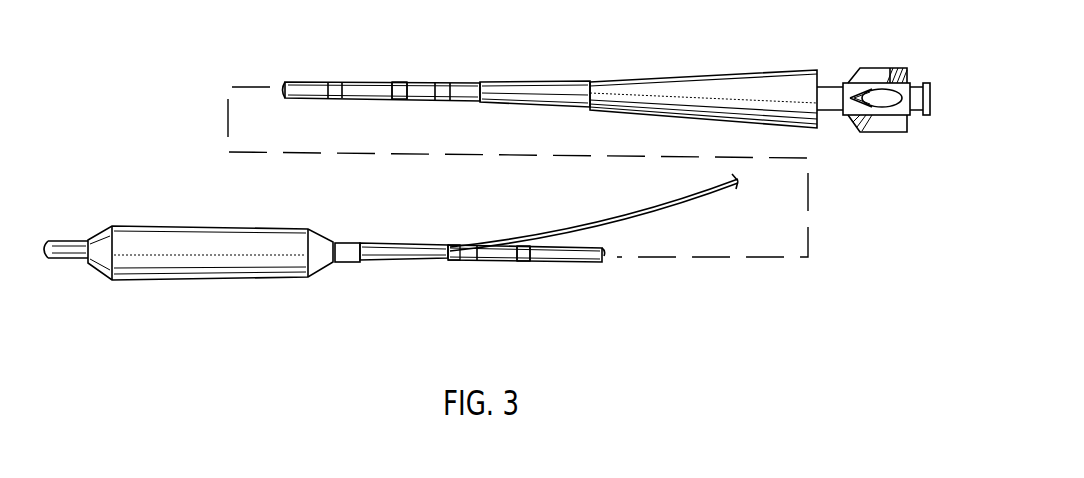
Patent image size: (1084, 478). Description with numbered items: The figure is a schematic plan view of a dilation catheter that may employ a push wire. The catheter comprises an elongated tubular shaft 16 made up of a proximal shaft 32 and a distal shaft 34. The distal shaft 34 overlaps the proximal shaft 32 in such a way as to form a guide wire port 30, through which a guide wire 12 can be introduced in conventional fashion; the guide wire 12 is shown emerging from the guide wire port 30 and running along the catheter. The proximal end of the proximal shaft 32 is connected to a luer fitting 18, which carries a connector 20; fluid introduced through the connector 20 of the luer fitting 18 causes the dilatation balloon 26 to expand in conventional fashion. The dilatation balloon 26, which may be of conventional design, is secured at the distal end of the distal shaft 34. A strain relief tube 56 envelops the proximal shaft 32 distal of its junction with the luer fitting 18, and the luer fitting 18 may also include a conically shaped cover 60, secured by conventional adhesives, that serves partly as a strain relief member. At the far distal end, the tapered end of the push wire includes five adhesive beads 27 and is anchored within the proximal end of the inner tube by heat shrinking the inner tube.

The guide wire 12 is at (690, 200).
The elongated tubular shaft 16 is at (307, 78).
The luer fitting 18 is at (827, 73).
The connector 20 is at (930, 103).
The dilatation balloon 26 is at (242, 245).
The adhesive beads 27 is at (48, 241).
The guide wire port 30 is at (457, 245).
The proximal shaft 32 is at (420, 90).
The distal shaft 34 is at (398, 252).
The strain relief tube 56 is at (537, 93).
The conically shaped cover 60 is at (727, 87).